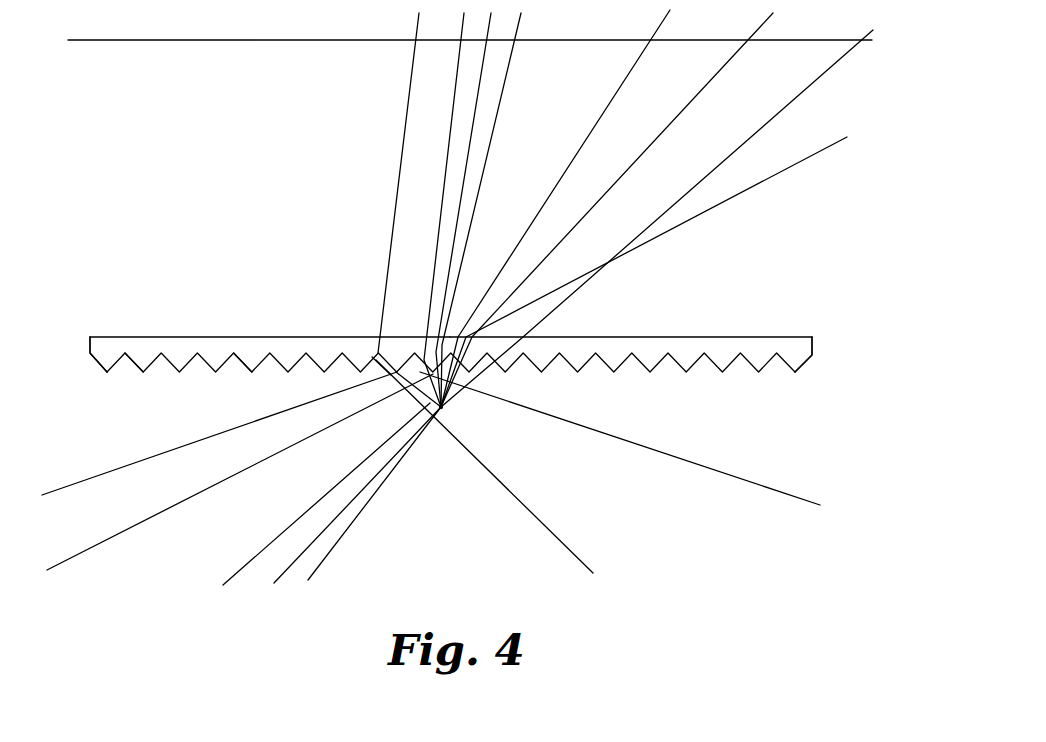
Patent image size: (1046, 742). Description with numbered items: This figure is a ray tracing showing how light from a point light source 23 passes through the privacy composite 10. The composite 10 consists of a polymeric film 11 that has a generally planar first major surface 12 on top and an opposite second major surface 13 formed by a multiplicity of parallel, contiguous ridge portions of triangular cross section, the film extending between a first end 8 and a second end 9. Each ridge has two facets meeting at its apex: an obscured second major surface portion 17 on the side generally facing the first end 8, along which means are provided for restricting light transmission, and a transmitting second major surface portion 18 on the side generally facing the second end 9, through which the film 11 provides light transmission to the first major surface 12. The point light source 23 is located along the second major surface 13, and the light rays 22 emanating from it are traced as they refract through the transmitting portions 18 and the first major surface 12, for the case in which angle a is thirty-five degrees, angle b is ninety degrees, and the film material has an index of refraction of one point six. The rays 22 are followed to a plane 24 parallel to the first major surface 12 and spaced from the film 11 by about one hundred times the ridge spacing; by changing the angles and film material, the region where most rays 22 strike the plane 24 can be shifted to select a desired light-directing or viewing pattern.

The first end 8 is at (89, 344).
The second end 9 is at (814, 345).
The composite 10 is at (452, 351).
The polymeric film 11 is at (176, 328).
The first major surface 12 is at (642, 336).
The second major surface 13 is at (672, 367).
The obscured second major surface portion 17 is at (240, 360).
The transmitting second major surface portion 18 is at (155, 367).
The light rays 22 is at (592, 129).
The point light source 23 is at (445, 403).
The plane 24 is at (190, 46).